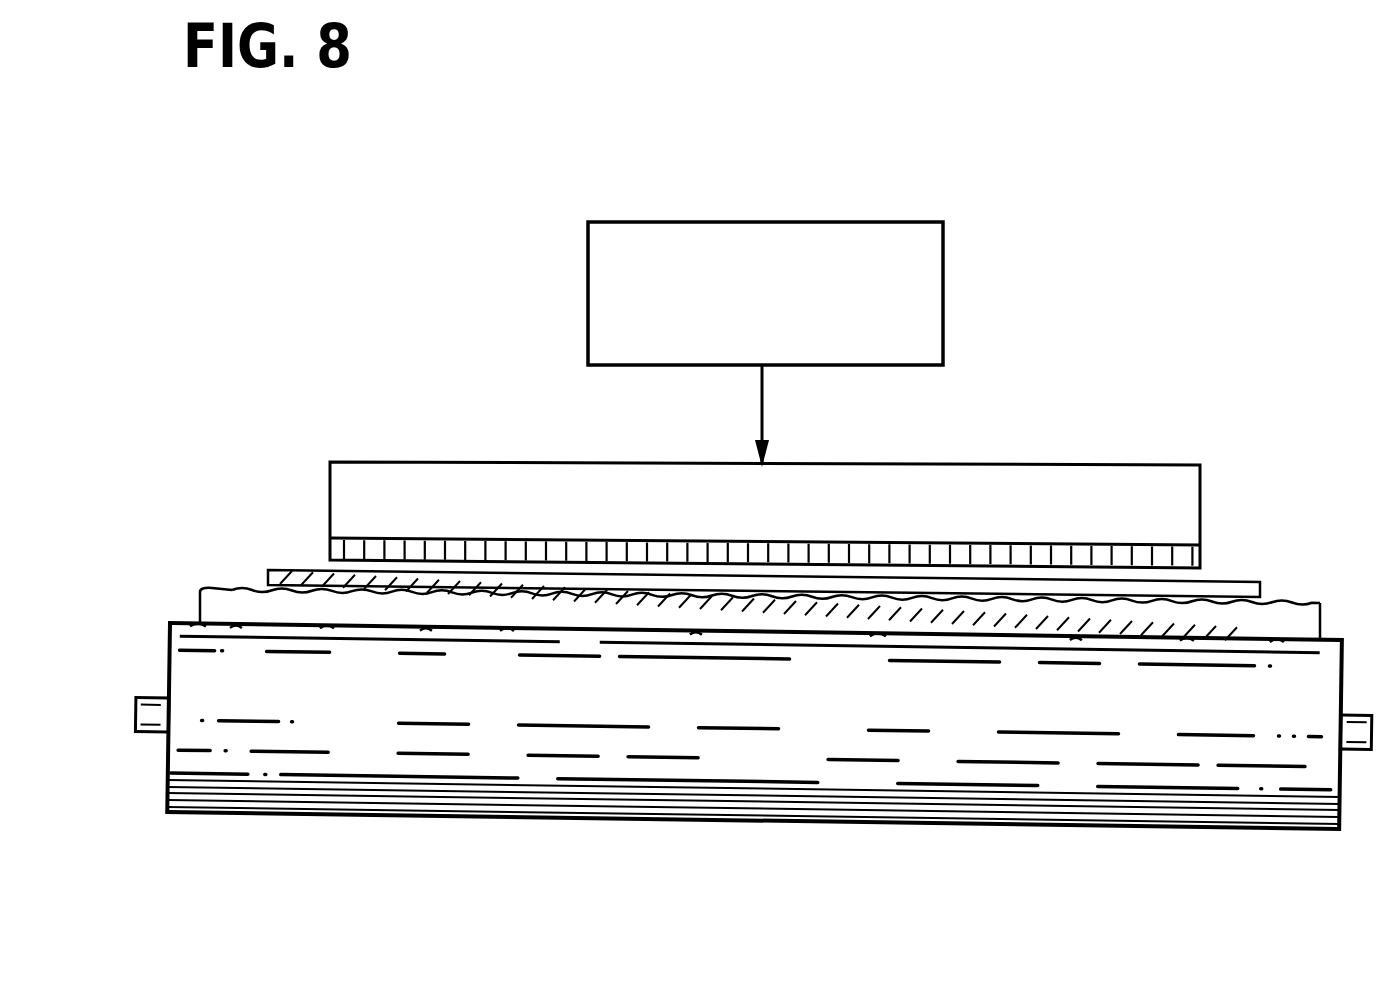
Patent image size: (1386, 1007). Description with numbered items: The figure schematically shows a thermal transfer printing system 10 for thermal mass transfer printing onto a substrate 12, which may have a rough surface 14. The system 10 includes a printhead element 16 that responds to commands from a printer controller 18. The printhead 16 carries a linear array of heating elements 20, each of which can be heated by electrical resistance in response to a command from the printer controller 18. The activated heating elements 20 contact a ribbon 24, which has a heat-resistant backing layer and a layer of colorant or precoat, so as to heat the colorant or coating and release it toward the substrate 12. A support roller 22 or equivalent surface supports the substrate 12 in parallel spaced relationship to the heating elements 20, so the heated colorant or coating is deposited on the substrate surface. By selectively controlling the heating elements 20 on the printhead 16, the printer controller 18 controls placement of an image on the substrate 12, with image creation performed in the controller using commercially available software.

The thermal transfer printing system 10 is at (790, 197).
The substrate 12 is at (1280, 605).
The rough surface 14 is at (232, 588).
The printhead element 16 is at (940, 465).
The printer controller 18 is at (917, 222).
The heating elements 20 is at (400, 550).
The support roller 22 is at (267, 813).
The ribbon 24 is at (1215, 588).